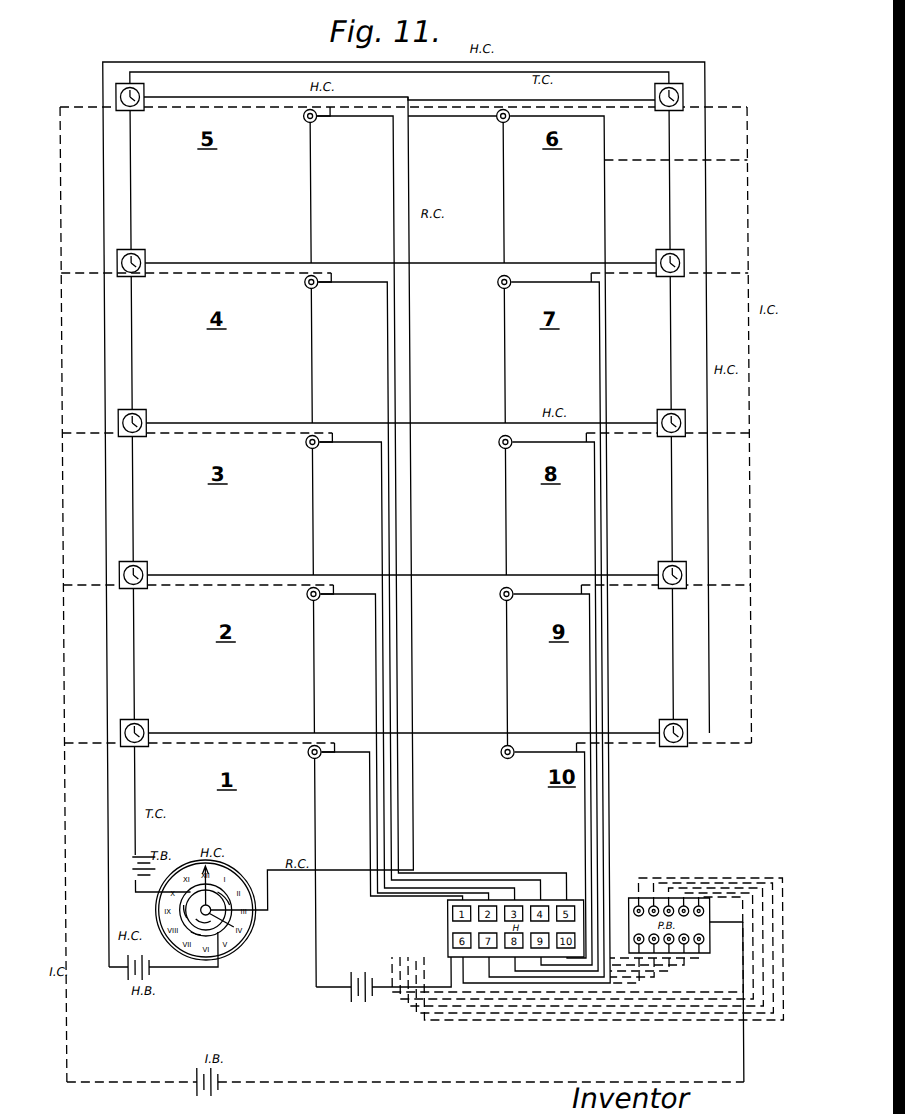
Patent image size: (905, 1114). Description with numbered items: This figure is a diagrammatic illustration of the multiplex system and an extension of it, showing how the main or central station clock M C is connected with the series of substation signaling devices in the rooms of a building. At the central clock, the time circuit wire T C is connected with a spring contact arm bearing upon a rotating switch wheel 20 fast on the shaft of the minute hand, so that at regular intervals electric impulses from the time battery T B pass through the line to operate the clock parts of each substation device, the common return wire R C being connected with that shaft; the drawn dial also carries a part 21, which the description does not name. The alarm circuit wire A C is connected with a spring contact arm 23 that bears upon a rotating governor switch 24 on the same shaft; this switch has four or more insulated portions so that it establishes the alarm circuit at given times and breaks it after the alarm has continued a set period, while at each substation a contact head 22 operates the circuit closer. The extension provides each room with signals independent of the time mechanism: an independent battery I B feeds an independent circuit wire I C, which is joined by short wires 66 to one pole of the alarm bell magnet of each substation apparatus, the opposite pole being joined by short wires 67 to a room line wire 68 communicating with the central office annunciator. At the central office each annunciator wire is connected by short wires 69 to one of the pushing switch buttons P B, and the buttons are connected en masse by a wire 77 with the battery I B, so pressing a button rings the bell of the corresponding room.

The short wires 66 is at (724, 746).
The short wires 67 is at (643, 745).
The room line wire 68 is at (583, 829).
The short wires 69 is at (672, 966).
The wire 77 is at (486, 1082).
The rotary switch wheel 20 is at (206, 910).
The hour hand contact 21 is at (223, 894).
The contact head 22 is at (198, 934).
The spring contact arm 23 is at (201, 924).
The rotating governor switch 24 is at (187, 911).